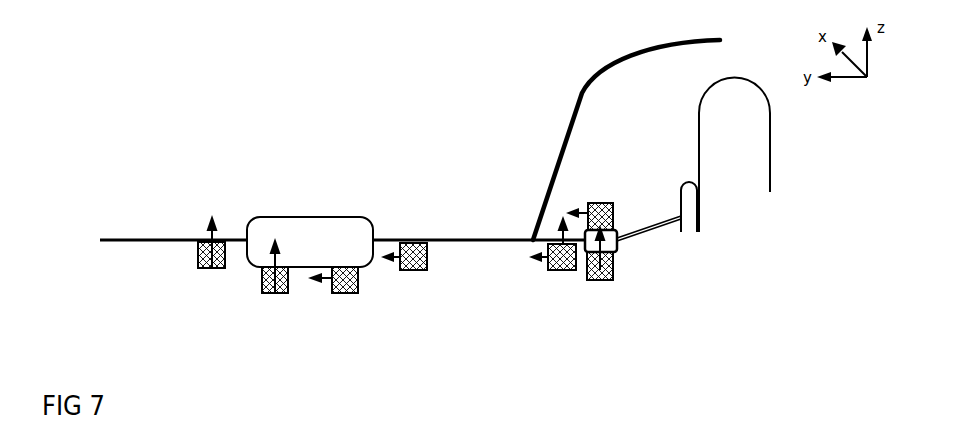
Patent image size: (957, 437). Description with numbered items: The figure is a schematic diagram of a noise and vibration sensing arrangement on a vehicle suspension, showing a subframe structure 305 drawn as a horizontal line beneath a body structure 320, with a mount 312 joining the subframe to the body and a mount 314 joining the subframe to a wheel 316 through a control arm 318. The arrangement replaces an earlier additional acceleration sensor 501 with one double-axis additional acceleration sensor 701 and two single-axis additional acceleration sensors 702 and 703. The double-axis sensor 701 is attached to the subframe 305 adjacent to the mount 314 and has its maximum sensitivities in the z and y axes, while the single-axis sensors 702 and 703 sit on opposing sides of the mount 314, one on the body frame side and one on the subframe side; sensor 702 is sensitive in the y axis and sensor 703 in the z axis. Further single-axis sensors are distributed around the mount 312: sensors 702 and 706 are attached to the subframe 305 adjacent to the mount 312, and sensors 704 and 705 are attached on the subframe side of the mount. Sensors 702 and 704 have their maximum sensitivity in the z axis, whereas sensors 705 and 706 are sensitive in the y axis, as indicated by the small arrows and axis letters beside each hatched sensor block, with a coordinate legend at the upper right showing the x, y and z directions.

The subframe structure 305 is at (152, 289).
The mount 312 is at (303, 217).
The mount 314 is at (617, 247).
The wheel 316 is at (770, 173).
The control arm 318 is at (647, 220).
The body structure 320 is at (152, 188).
The additional acceleration sensor 501 is at (490, 255).
The double-axis additional acceleration sensor 701 is at (533, 237).
The single-axis additional acceleration sensor 702 is at (227, 268).
The single-axis additional acceleration sensor 703 is at (615, 273).
The single-axis additional acceleration sensor 704 is at (290, 278).
The single-axis additional acceleration sensor 705 is at (343, 293).
The single-axis additional acceleration sensor 706 is at (428, 247).